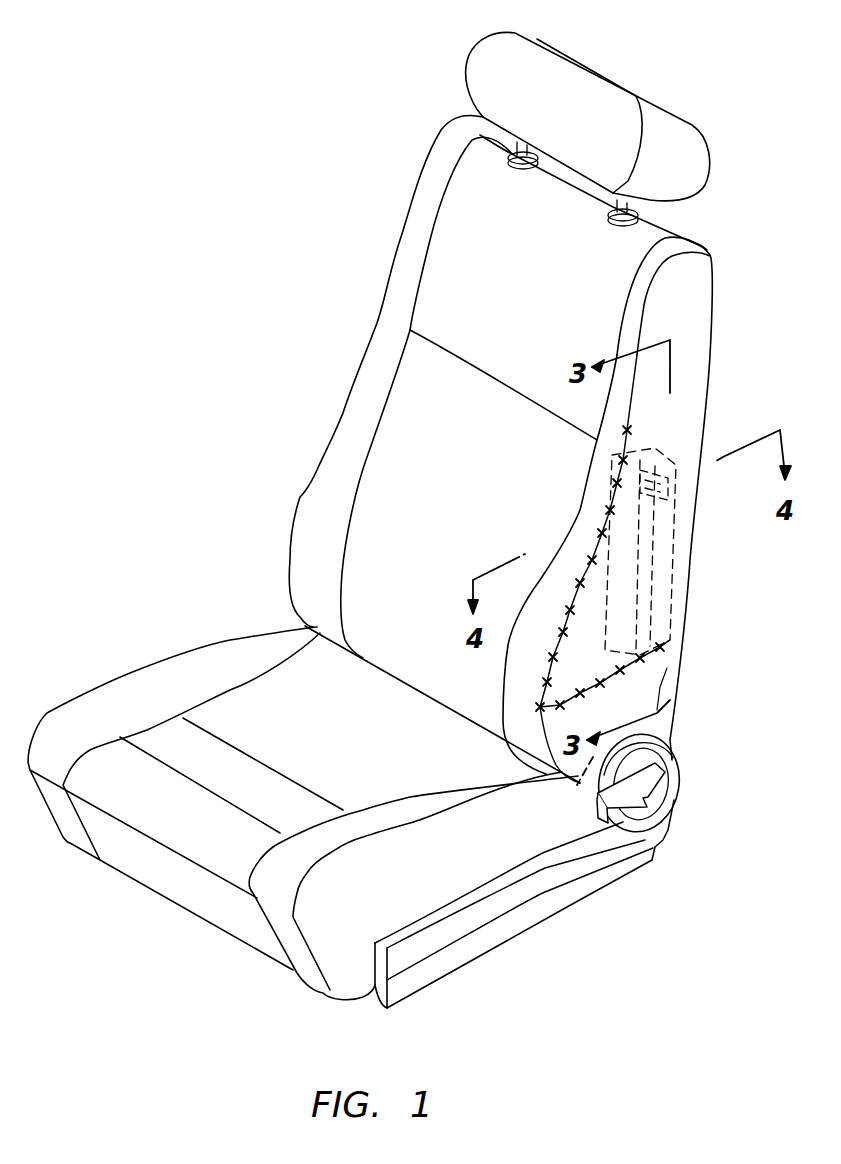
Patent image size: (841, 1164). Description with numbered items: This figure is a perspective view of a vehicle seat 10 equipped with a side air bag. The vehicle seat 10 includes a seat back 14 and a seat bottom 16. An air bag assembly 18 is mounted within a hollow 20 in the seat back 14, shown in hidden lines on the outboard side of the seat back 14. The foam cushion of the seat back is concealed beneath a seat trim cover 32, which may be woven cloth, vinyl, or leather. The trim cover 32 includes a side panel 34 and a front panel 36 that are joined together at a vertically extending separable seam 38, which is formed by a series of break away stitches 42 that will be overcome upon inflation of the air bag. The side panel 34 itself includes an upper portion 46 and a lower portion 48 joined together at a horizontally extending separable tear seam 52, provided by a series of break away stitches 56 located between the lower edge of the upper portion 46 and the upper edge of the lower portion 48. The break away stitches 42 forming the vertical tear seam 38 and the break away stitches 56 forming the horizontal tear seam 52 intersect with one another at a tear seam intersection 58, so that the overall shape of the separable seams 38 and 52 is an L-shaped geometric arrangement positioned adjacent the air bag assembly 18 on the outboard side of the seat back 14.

The vehicle seat 10 is at (703, 236).
The seat back 14 is at (441, 157).
The seat bottom 16 is at (193, 690).
The air bag assembly 18 is at (672, 566).
The hollow 20 is at (684, 536).
The seat trim cover 32 is at (390, 481).
The side panel 34 is at (680, 429).
The front panel 36 is at (591, 494).
The separable seam 38 is at (594, 544).
The break away stitches 42 is at (586, 618).
The upper portion 46 is at (601, 689).
The lower portion 48 is at (571, 793).
The tear seam 52 is at (662, 652).
The break away stitches 56 is at (668, 670).
The tear seam intersection 58 is at (524, 727).